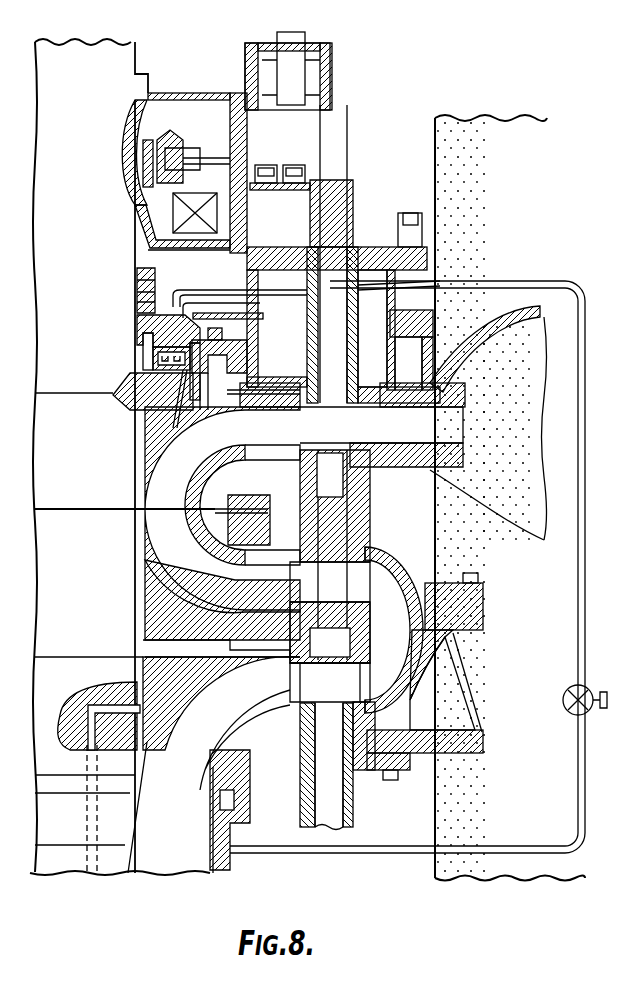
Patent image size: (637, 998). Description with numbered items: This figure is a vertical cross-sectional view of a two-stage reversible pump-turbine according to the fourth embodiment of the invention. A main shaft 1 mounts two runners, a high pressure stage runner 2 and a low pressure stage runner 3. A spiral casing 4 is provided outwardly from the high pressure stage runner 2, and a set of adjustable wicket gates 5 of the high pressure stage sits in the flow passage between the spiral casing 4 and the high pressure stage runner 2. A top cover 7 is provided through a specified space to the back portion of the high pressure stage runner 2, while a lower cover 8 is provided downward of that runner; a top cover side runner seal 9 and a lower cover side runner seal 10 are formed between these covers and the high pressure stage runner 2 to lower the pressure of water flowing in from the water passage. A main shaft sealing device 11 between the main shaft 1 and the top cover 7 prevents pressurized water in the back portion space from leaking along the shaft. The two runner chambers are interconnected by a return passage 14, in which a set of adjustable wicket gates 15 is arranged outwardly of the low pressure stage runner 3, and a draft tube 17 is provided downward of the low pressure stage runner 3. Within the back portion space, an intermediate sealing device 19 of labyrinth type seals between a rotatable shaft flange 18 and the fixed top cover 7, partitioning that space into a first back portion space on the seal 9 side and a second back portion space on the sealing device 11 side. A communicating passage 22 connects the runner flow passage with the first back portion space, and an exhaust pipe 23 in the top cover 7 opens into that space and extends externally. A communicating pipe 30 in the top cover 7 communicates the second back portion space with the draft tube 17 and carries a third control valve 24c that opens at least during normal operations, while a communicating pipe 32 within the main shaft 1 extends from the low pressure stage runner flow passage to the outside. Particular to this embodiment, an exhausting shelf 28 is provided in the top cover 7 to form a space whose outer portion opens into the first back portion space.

The main shaft 1 is at (85, 50).
The high pressure stage runner 2 is at (148, 460).
The low pressure stage runner 3 is at (140, 668).
The spiral casing 4 is at (510, 325).
The adjustable wicket gates 5 is at (327, 412).
The top cover 7 is at (232, 344).
The lower cover 8 is at (292, 470).
The top cover side runner seal 9 is at (248, 368).
The lower cover side runner seal 10 is at (235, 512).
The main shaft sealing device 11 is at (160, 302).
The return passage 14 is at (280, 601).
The adjustable wicket gates 15 is at (312, 705).
The draft tube 17 is at (180, 843).
The shaft flange 18 is at (140, 388).
The intermediate sealing device 19 is at (150, 362).
The communicating passage 22 is at (178, 420).
The exhaust pipe 23 is at (225, 334).
The third control valve 24c is at (574, 688).
The exhausting shelf 28 is at (142, 330).
The communicating pipe 30 is at (222, 290).
The communicating pipe 32 is at (95, 757).